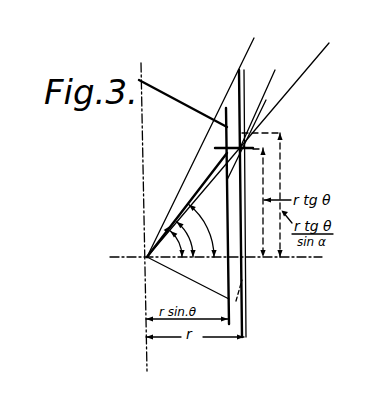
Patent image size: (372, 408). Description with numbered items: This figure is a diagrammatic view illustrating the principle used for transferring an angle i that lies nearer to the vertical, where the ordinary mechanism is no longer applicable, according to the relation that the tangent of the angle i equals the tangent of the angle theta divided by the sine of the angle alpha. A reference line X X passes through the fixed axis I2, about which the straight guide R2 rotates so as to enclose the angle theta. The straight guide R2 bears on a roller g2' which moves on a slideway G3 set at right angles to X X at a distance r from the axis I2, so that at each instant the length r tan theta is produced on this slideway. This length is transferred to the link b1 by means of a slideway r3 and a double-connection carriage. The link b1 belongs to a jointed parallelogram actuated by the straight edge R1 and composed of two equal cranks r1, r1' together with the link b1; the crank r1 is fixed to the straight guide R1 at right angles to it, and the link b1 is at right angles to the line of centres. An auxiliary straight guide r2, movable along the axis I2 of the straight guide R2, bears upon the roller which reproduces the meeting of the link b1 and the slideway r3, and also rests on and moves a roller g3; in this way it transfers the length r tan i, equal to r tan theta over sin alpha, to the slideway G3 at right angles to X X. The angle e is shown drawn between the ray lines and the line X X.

The line X X is at (212, 217).
The fixed axis I2 is at (137, 270).
The straight edge R1 is at (247, 48).
The straight guide R2 is at (326, 55).
The crank r1 is at (188, 279).
The crank r1' is at (183, 103).
The auxiliary straight guide r2 is at (252, 117).
The slideway r3 is at (187, 205).
The roller g2' is at (264, 167).
The roller g3 is at (267, 107).
The slideway G3 is at (247, 288).
The link b1 is at (226, 260).
The angle e is at (187, 239).
The angle i is at (203, 231).